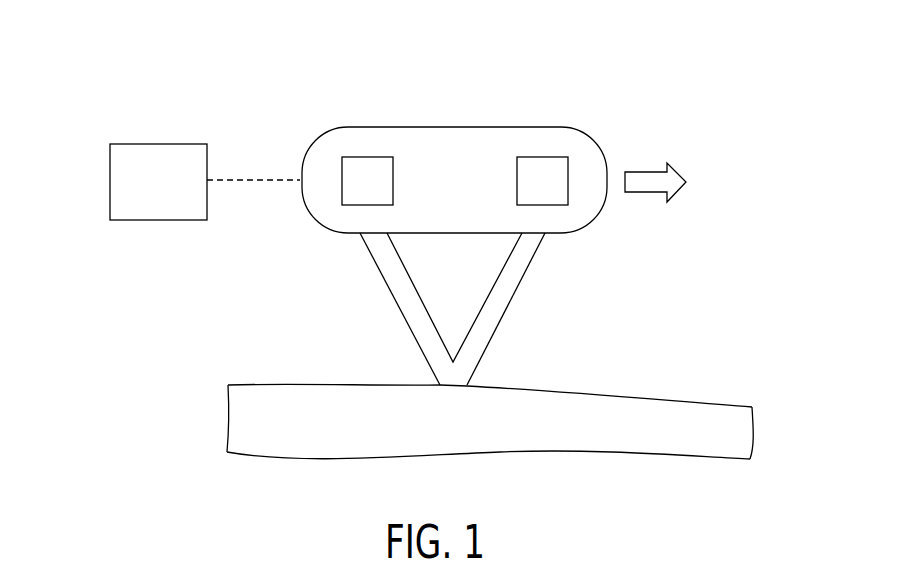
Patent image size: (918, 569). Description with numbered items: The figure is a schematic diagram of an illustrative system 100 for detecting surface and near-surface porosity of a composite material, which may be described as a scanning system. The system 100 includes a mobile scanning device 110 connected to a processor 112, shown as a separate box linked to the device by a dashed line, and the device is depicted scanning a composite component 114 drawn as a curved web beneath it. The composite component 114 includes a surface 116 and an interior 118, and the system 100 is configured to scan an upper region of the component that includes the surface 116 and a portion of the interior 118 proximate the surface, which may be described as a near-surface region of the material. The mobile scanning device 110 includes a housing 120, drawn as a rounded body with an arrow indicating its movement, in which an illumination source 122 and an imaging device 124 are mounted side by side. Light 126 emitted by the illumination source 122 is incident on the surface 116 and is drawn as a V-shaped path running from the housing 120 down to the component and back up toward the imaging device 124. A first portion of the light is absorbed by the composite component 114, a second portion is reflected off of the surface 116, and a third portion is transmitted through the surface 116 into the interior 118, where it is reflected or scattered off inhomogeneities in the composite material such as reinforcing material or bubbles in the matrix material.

The system 100 is at (198, 84).
The mobile scanning device 110 is at (630, 132).
The processor 112 is at (152, 220).
The composite component 114 is at (237, 381).
The surface 116 is at (594, 382).
The interior 118 is at (661, 417).
The housing 120 is at (465, 127).
The illumination source 122 is at (367, 205).
The imaging device 124 is at (543, 205).
The light 126 is at (405, 302).